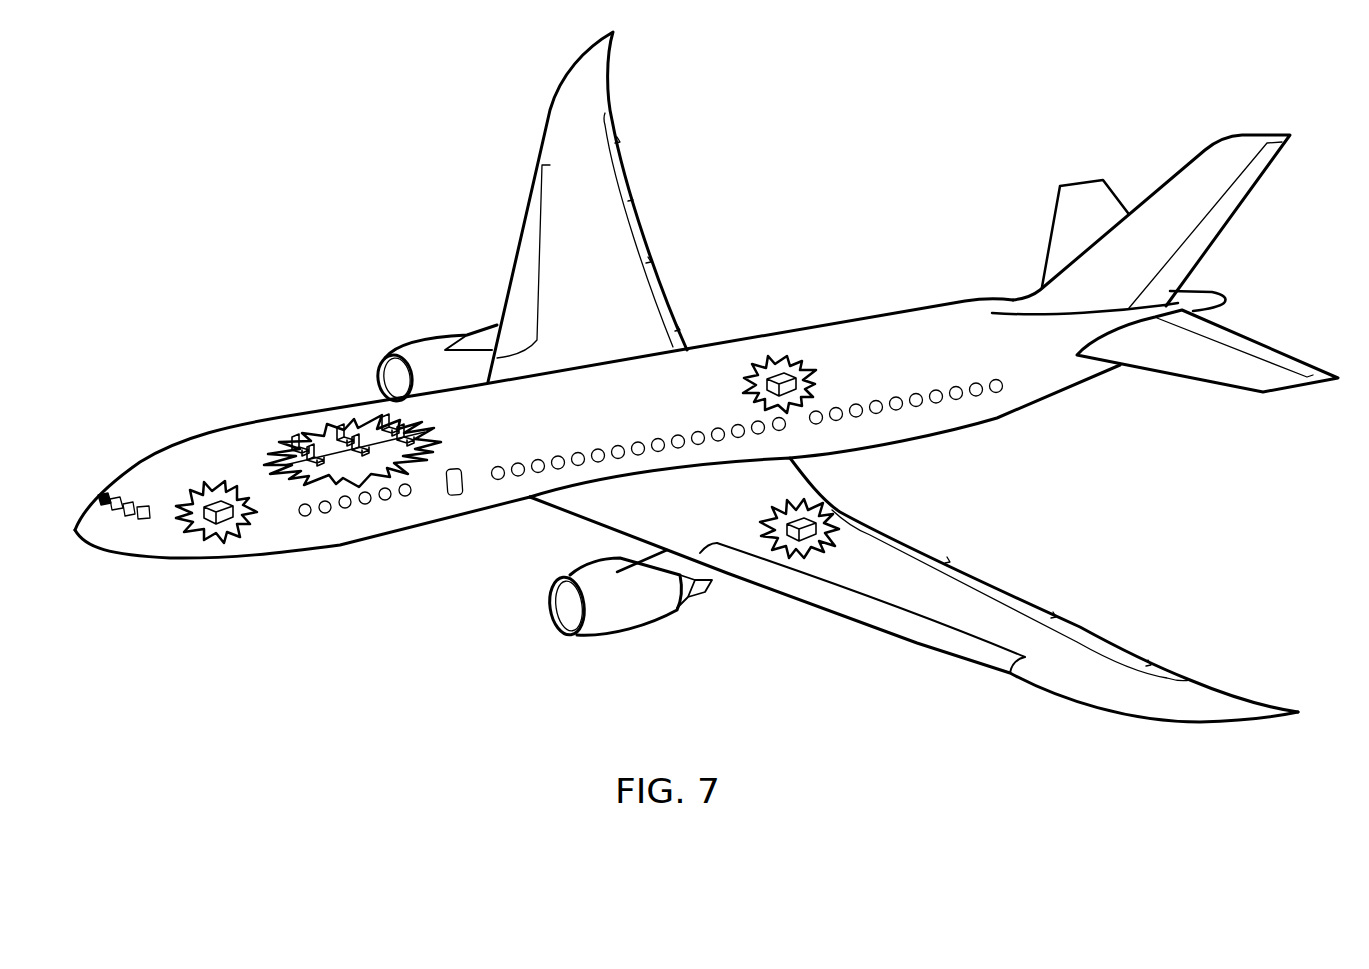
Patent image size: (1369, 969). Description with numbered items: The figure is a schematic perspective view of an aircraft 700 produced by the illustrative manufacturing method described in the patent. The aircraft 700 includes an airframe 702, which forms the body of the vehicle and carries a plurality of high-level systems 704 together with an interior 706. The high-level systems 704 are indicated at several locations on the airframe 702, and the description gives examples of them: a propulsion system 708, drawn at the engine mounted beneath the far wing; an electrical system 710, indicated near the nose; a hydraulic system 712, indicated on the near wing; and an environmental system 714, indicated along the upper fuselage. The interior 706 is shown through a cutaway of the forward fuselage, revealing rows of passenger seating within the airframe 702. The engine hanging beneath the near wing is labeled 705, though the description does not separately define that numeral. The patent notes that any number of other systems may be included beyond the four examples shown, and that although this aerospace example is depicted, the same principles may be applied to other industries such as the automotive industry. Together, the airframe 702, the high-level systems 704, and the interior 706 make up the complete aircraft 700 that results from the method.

The aircraft 700 is at (240, 173).
The airframe 702 is at (342, 397).
The high-level systems 704 is at (900, 283).
The engine 705 is at (630, 613).
The interior 706 is at (304, 446).
The propulsion system 708 is at (420, 347).
The electrical system 710 is at (217, 488).
The hydraulic system 712 is at (804, 520).
The environmental system 714 is at (772, 374).